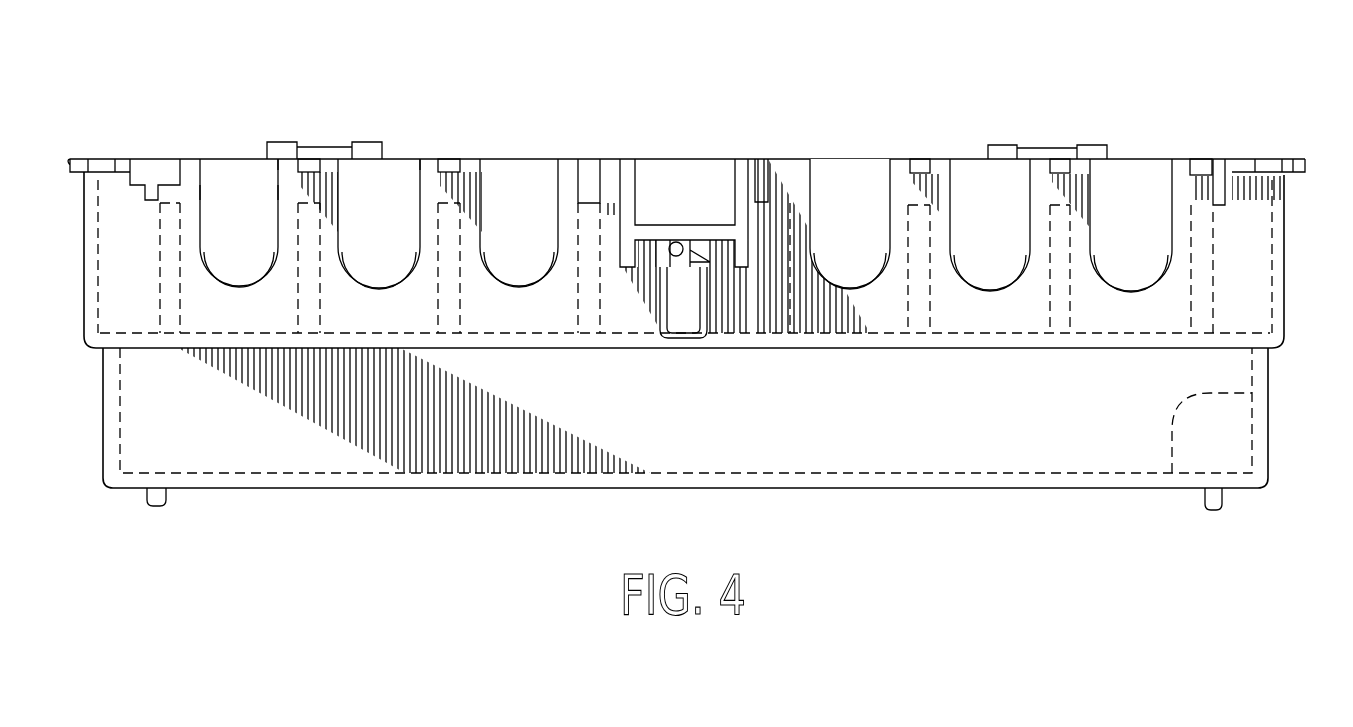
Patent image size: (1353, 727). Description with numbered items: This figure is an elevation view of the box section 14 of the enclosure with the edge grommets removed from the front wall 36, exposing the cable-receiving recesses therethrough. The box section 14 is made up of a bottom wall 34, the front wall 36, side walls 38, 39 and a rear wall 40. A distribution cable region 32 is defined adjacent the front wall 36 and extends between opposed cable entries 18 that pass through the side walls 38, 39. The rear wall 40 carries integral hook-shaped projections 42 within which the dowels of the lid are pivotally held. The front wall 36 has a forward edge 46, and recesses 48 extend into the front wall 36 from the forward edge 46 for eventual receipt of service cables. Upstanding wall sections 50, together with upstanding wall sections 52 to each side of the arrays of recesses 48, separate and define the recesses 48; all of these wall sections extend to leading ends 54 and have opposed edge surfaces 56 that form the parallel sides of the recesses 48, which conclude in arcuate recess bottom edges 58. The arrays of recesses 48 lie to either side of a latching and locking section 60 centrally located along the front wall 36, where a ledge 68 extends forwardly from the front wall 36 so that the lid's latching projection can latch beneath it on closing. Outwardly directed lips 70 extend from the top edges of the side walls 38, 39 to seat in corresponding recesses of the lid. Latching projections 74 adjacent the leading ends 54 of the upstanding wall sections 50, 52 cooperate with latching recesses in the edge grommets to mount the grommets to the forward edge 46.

The box section 14 is at (937, 108).
The cable entries 18 is at (103, 448).
The distribution cable region 32 is at (1262, 398).
The bottom wall 34 is at (400, 488).
The front wall 36 is at (125, 240).
The side wall 38 is at (83, 190).
The side wall 39 is at (1287, 251).
The rear wall 40 is at (1132, 190).
The hook-shaped projections 42 is at (366, 152).
The forward edge 46 is at (477, 160).
The recesses 48 is at (850, 228).
The upstanding wall sections 50 is at (278, 166).
The upstanding wall sections 52 is at (193, 162).
The leading ends 54 is at (176, 159).
The opposed edge surfaces 56 is at (278, 195).
The arcuate recess bottom edges 58 is at (239, 223).
The latching and locking section 60 is at (720, 230).
The ledge 68 is at (690, 242).
The outwardly directed lips 70 is at (79, 164).
The latching projections 74 is at (145, 165).